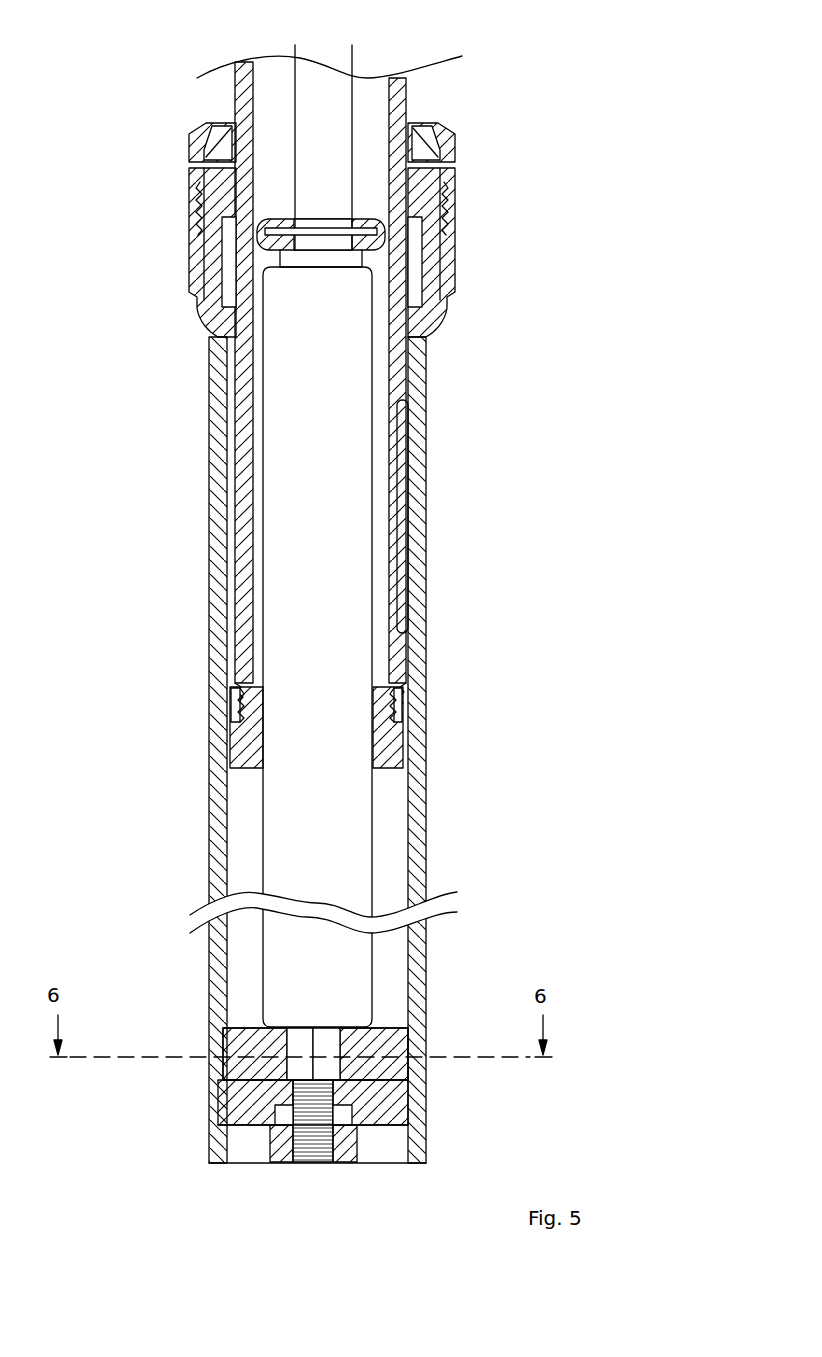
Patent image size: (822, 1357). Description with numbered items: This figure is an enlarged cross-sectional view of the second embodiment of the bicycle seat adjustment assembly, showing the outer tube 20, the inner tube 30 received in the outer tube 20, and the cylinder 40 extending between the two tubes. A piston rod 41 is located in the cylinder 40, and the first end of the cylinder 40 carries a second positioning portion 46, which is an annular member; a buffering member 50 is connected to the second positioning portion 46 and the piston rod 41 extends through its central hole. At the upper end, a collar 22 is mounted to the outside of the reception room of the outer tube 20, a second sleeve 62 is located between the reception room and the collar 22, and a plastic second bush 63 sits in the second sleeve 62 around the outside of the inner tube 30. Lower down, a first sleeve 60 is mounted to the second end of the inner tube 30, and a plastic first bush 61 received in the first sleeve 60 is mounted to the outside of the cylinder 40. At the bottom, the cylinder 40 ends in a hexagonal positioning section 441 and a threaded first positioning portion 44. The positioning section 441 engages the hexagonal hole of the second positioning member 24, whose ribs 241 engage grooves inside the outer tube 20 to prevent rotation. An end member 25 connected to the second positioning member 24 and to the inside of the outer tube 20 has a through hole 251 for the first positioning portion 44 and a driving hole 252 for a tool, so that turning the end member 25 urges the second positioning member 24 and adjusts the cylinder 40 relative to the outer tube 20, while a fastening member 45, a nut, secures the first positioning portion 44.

The outer tube 20 is at (215, 885).
The collar 22 is at (442, 133).
The second positioning member 24 is at (245, 1050).
The ribs 241 is at (300, 1023).
The end member 25 is at (405, 1095).
The through hole 251 is at (296, 1097).
The driving hole 252 is at (340, 1140).
The inner tube 30 is at (240, 102).
The cylinder 40 is at (333, 853).
The piston rod 41 is at (318, 85).
The first positioning portion 44 is at (313, 1157).
The positioning section 441 is at (327, 1045).
The fastening member 45 is at (272, 1138).
The second positioning portion 46 is at (357, 233).
The buffering member 50 is at (263, 238).
The first sleeve 60 is at (242, 735).
The first bush 61 is at (247, 758).
The second sleeve 62 is at (210, 163).
The second bush 63 is at (410, 190).